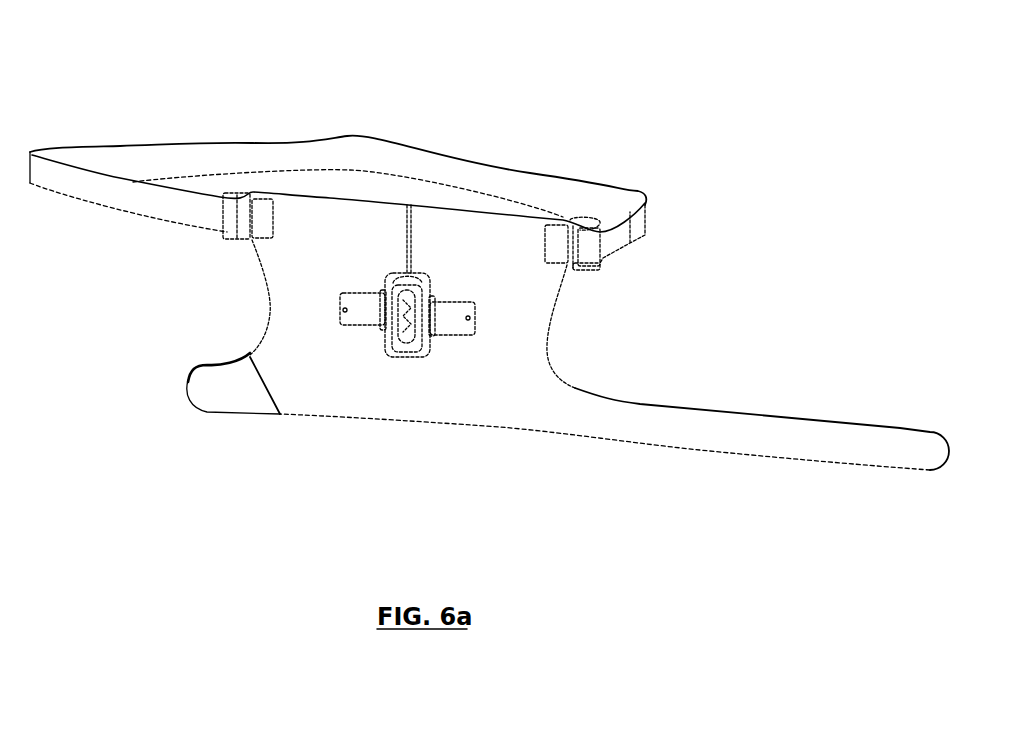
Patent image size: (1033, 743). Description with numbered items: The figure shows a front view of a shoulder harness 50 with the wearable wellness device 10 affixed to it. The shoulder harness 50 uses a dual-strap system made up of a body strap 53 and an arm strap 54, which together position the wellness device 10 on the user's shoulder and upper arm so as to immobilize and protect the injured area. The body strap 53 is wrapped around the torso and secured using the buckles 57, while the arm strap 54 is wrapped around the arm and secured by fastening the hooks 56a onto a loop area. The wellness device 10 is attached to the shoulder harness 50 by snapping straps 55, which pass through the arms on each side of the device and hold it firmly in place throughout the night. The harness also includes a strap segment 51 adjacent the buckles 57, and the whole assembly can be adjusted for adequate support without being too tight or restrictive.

The shoulder harness 50 is at (390, 120).
The body strap 53 is at (527, 183).
The buckles 57 is at (573, 243).
The strap segment 51 is at (527, 280).
The arm strap 54 is at (713, 442).
The hooks 56a is at (238, 403).
The wellness device 10 is at (412, 293).
The snapping straps 55 is at (363, 327).